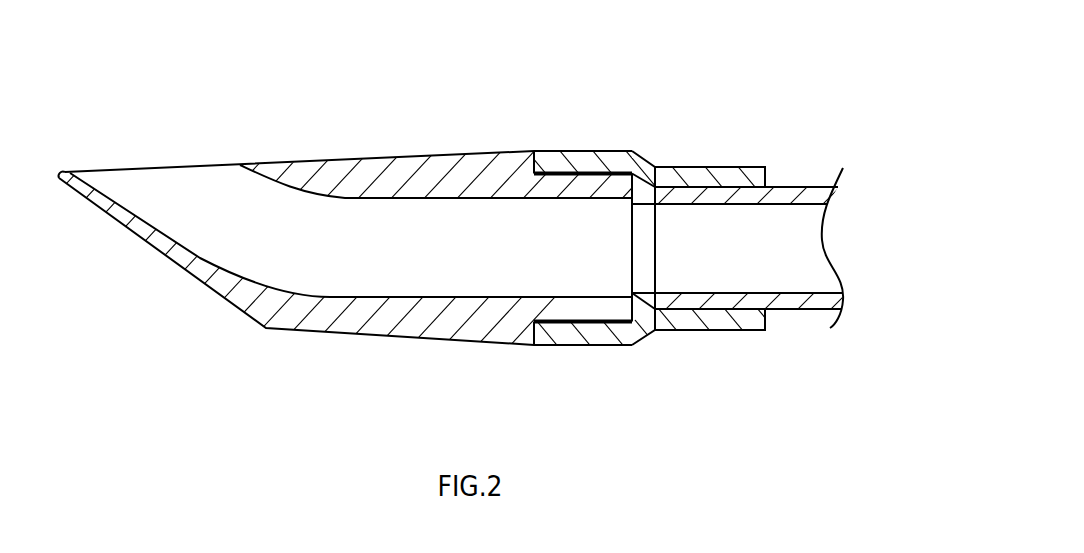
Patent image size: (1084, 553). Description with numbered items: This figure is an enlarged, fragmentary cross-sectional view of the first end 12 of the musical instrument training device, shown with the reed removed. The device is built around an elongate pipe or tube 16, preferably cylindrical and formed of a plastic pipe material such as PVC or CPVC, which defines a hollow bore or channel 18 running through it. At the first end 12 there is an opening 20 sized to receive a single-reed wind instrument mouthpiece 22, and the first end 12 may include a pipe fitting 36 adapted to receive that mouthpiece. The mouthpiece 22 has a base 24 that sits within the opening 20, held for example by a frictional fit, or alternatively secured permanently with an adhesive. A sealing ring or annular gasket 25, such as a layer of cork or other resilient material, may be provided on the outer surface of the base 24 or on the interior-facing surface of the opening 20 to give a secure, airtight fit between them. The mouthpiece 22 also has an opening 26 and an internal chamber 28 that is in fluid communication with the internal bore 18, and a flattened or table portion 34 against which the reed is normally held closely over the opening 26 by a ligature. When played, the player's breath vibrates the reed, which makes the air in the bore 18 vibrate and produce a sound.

The first end 12 is at (795, 64).
The elongate pipe or tube 16 is at (815, 197).
The hollow bore or channel 18 is at (793, 250).
The opening 20 is at (553, 175).
The single-reed wind instrument mouthpiece 22 is at (268, 328).
The base 24 is at (611, 323).
The sealing ring or annular gasket 25 is at (555, 326).
The opening 26 is at (155, 168).
The internal chamber 28 is at (238, 222).
The flattened or table portion 34 is at (348, 158).
The pipe fitting 36 is at (693, 168).